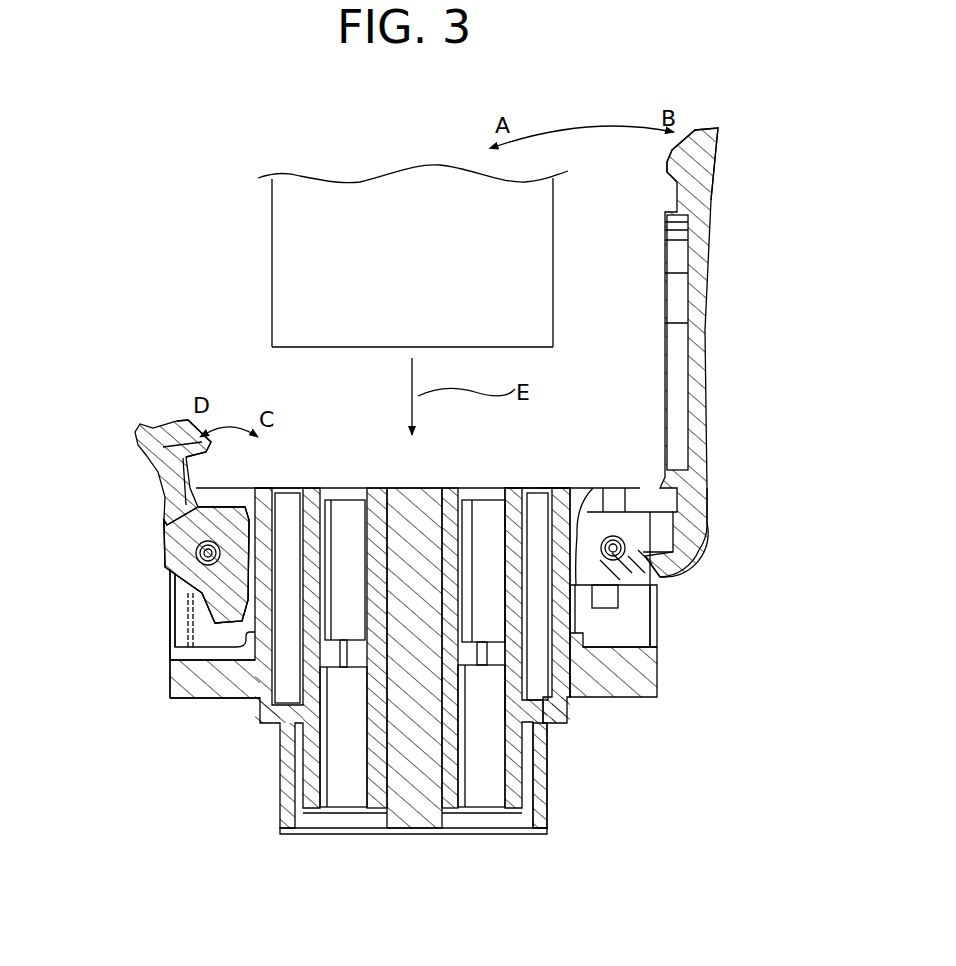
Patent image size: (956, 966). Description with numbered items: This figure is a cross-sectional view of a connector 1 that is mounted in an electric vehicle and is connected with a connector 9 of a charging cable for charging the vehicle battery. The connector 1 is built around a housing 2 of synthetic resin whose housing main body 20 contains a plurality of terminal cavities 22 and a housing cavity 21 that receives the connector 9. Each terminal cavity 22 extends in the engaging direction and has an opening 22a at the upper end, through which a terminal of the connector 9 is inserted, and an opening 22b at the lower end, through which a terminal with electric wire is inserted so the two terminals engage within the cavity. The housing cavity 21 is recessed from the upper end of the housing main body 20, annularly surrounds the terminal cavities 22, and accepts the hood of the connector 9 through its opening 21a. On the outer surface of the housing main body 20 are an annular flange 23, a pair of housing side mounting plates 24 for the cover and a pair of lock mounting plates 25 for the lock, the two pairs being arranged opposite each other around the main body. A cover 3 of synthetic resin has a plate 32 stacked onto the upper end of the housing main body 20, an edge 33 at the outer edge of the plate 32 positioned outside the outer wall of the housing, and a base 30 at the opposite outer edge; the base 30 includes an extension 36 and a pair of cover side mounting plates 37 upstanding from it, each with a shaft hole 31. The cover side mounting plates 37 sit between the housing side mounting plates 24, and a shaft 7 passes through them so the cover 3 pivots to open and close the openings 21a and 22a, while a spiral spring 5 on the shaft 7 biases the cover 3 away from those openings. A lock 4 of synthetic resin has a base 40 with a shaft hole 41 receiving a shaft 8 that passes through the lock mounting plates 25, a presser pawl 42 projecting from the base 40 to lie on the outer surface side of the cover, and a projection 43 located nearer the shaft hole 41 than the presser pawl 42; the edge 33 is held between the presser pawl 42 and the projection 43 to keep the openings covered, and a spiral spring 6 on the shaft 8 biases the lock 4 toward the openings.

The connector 1 is at (133, 673).
The housing 2 is at (278, 775).
The cover 3 is at (682, 387).
The lock 4 is at (166, 521).
The spring 5 is at (681, 578).
The spring 6 is at (170, 617).
The shaft 7 is at (660, 553).
The shaft 8 is at (196, 556).
The connector 9 is at (269, 226).
The housing main body 20 is at (549, 778).
The housing cavity 21 is at (549, 658).
The opening 21a is at (548, 487).
The terminal cavity 22 is at (418, 667).
The opening 22a is at (345, 498).
The opening 22b is at (488, 737).
The flange 23 is at (210, 698).
The housing side mounting plate 24 is at (668, 641).
The lock mounting plate 25 is at (186, 628).
The base 30 is at (628, 602).
The shaft hole 31 is at (612, 535).
The plate 32 is at (703, 290).
The edge 33 is at (716, 138).
The extension 36 is at (706, 530).
The cover side mounting plate 37 is at (641, 647).
The base 40 is at (169, 583).
The shaft hole 41 is at (222, 528).
The presser pawl 42 is at (203, 442).
The projection 43 is at (275, 497).